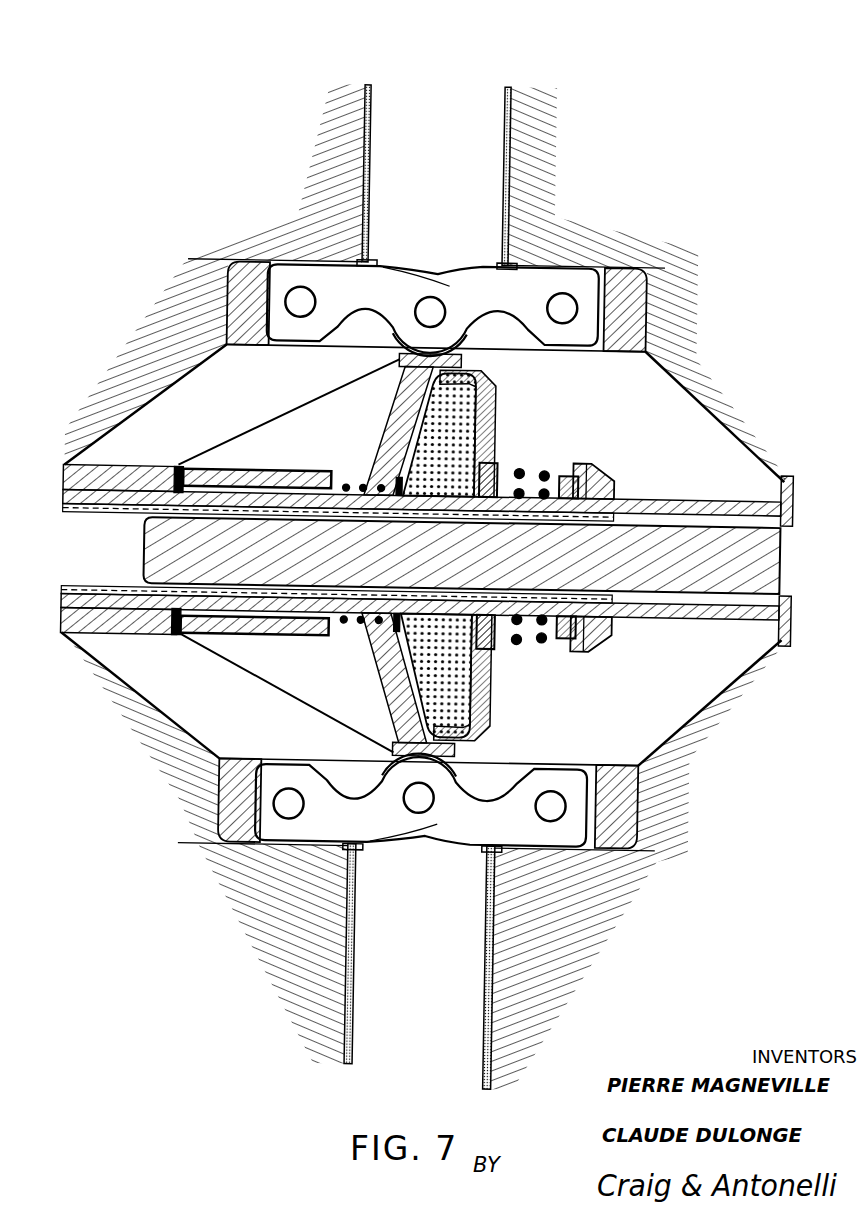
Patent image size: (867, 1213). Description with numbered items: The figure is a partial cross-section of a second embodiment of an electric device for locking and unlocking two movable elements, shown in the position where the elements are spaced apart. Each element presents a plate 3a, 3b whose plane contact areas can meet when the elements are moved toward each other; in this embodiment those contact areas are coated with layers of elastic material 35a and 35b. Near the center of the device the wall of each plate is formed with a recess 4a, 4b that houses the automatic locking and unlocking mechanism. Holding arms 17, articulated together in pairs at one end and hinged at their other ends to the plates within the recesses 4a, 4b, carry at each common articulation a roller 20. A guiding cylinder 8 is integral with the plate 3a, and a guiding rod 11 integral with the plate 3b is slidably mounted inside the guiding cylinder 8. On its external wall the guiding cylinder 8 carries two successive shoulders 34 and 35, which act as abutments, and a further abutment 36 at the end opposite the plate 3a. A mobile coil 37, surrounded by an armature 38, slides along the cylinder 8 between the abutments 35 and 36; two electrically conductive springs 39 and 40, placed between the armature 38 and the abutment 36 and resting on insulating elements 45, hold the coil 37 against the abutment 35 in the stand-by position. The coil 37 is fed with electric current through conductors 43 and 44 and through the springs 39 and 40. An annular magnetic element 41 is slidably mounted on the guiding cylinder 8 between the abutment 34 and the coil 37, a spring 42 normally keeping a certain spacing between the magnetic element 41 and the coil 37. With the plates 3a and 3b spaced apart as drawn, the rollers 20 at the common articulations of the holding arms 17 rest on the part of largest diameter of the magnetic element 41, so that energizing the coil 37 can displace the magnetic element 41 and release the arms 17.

The plate 3a is at (357, 150).
The plate 3b is at (504, 106).
The layer of elastic material 35a is at (366, 97).
The layer of elastic material 35b is at (497, 125).
The holding arms 17 is at (380, 292).
The roller 20 is at (458, 342).
The recess 4a is at (190, 414).
The recess 4b is at (673, 428).
The guiding cylinder 8 is at (115, 635).
The guiding rod 11 is at (700, 590).
The magnetic element 41 is at (380, 418).
The spring 42 is at (320, 678).
The shoulder 34 is at (178, 638).
The shoulder 35 is at (322, 716).
The mobile coil 37 is at (452, 379).
The armature 38 is at (490, 386).
The electrically conductive spring 39 is at (521, 468).
The electrically conductive spring 40 is at (521, 488).
The conductor 43 is at (494, 468).
The conductor 44 is at (488, 464).
The abutment 36 is at (612, 478).
The insulating elements 45 is at (577, 652).